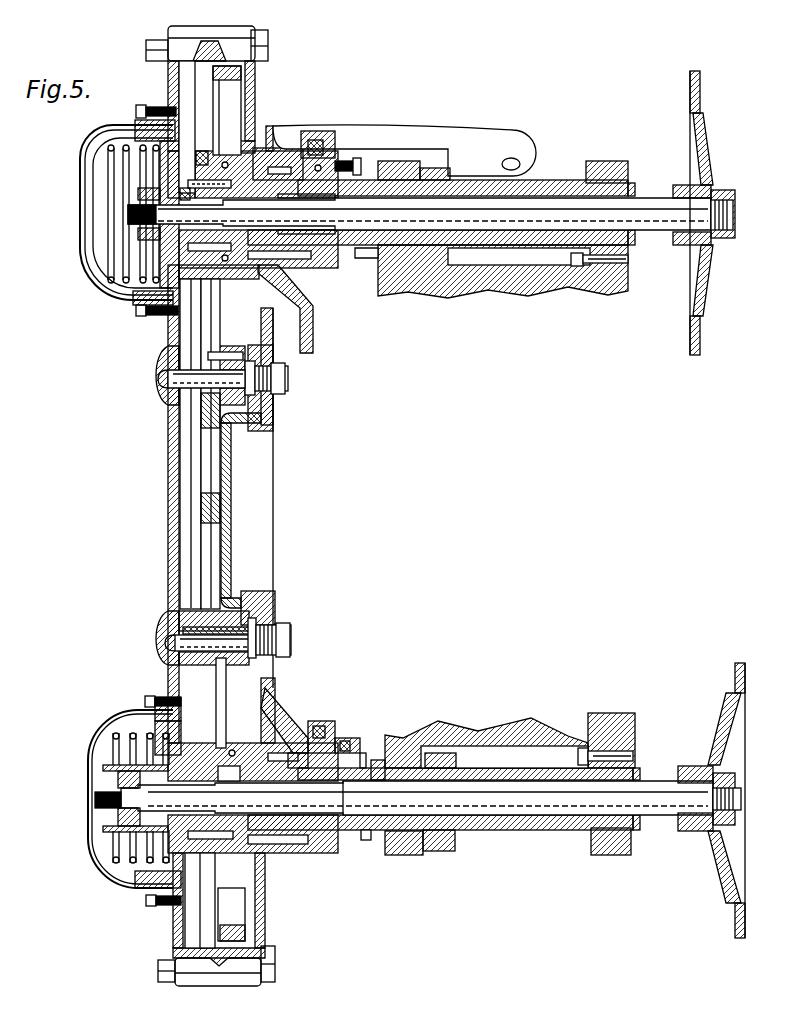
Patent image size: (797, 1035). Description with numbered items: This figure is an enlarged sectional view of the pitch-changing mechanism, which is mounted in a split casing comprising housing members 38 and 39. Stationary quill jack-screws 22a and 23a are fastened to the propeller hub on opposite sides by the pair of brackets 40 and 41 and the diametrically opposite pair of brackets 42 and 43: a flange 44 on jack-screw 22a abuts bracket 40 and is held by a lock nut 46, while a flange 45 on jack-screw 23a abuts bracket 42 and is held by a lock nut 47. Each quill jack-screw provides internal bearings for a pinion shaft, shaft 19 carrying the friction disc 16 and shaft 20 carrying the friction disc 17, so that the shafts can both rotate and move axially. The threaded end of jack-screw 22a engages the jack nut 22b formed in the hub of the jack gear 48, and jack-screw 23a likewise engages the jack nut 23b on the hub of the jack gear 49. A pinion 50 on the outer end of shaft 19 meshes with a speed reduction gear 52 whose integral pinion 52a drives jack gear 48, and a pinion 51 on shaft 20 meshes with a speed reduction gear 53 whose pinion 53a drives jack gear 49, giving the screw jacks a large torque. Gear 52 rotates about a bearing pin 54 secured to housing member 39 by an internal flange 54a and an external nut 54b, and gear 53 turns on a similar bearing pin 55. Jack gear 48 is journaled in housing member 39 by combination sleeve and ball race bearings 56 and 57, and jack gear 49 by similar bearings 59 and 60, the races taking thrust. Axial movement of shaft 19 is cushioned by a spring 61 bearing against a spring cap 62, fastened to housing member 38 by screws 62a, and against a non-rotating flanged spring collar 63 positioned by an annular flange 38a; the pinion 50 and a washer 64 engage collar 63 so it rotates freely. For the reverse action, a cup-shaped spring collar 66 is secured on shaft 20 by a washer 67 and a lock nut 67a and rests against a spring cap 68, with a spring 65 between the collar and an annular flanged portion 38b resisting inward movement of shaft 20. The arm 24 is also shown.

The friction disc 16 is at (702, 160).
The friction disc 17 is at (737, 680).
The pinion shaft 19 is at (636, 192).
The pinion shaft 20 is at (652, 807).
The quill jack-screw 22a is at (286, 190).
The jack nut 22b is at (262, 120).
The quill jack-screw 23a is at (336, 775).
The jack nut 23b is at (358, 833).
The control arm 24 is at (445, 115).
The housing member 38 is at (161, 451).
The annular flange 38a is at (195, 132).
The annular flanged portion 38b is at (176, 880).
The housing member 39 is at (223, 448).
The bracket 40 is at (390, 153).
The bracket 41 is at (596, 153).
The bracket 42 is at (398, 847).
The bracket 43 is at (601, 847).
The flange 44 is at (352, 160).
The flange 45 is at (368, 752).
The lock nut 46 is at (442, 167).
The lock nut 47 is at (447, 838).
The jack gear 48 is at (205, 86).
The jack gear 49 is at (217, 676).
The pinion 50 is at (186, 172).
The pinion 51 is at (200, 820).
The speed reduction gear 52 is at (199, 432).
The pinion 52a is at (223, 344).
The speed reduction gear 53 is at (200, 578).
The pinion 53a is at (228, 612).
The bearing pin 54 is at (280, 370).
The internal flange 54a is at (258, 338).
The external nut 54b is at (247, 360).
The bearing pin 55 is at (284, 633).
The combination sleeve and ball race bearing 56 is at (218, 153).
The combination sleeve and ball race bearing 57 is at (336, 153).
The combination sleeve and ball race bearing 59 is at (225, 741).
The combination sleeve and ball race bearing 60 is at (325, 730).
The spring 61 is at (88, 182).
The spring cap 62 is at (75, 198).
The screws 62a is at (131, 97).
The spring collar 63 is at (190, 150).
The washer 64 is at (176, 180).
The spring 65 is at (110, 727).
The spring collar 66 is at (103, 744).
The washer 67 is at (110, 770).
The lock nut 67a is at (88, 792).
The spring cap 68 is at (81, 815).